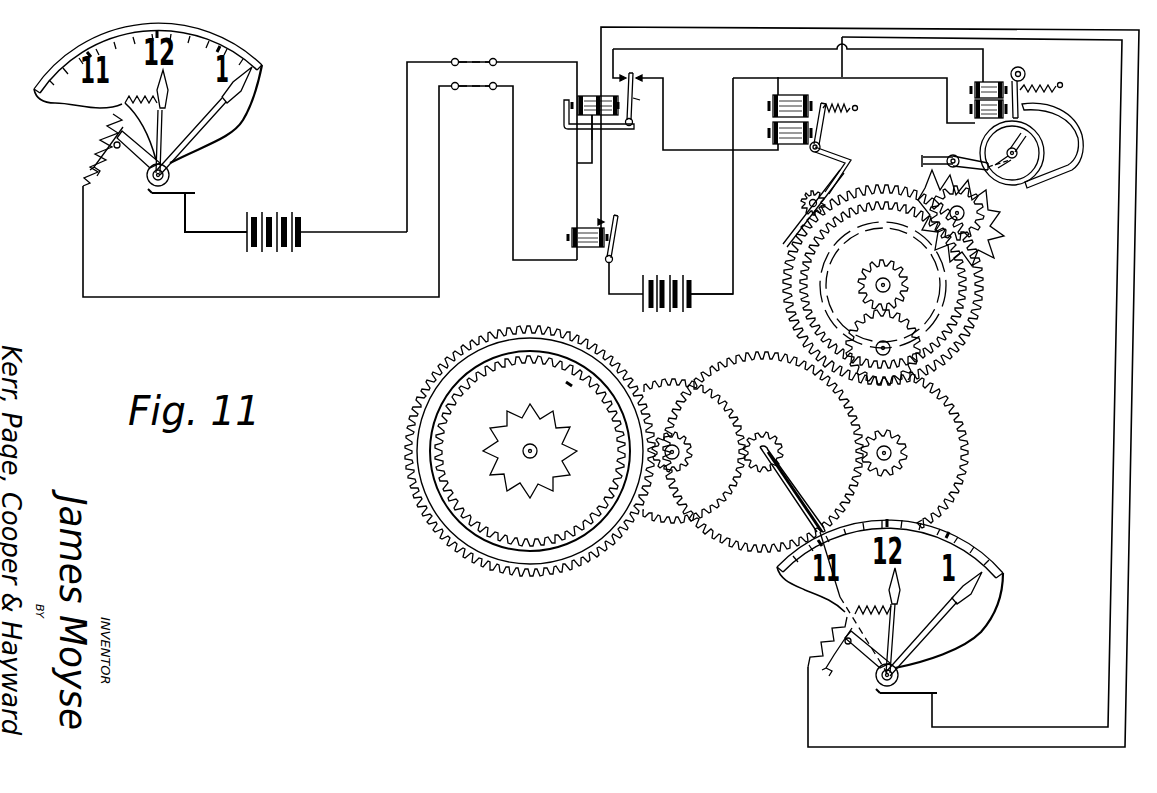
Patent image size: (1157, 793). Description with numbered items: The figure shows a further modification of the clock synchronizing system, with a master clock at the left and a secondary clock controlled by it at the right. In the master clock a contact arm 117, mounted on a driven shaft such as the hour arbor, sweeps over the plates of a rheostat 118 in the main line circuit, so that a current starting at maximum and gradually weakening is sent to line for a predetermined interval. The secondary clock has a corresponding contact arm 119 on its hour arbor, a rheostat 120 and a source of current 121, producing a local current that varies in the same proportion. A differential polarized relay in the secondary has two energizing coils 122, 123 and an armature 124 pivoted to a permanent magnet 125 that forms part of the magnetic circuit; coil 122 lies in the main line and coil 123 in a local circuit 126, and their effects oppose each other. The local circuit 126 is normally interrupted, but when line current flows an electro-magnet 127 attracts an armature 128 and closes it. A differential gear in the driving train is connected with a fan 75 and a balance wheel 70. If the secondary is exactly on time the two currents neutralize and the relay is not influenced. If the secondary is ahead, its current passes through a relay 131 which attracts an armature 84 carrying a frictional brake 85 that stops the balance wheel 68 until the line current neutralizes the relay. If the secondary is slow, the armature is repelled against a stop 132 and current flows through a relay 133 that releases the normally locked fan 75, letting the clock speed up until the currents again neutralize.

The contact arm 117 is at (125, 162).
The rheostat 118 is at (88, 158).
The contact arm 119 is at (856, 665).
The rheostat 120 is at (812, 643).
The source of current 121 is at (671, 302).
The energizing coil 122 is at (600, 96).
The energizing coil 123 is at (606, 117).
The armature 124 is at (634, 99).
The permanent magnet 125 is at (570, 129).
The local circuit 126 is at (733, 208).
The electro-magnet 127 is at (590, 247).
The armature 128 is at (617, 234).
The relay 131 is at (993, 82).
The stop 132 is at (640, 76).
The relay 133 is at (798, 96).
The balance wheel 68 is at (988, 240).
The balance wheel 70 is at (1005, 184).
The fan 75 is at (830, 179).
The armature 84 is at (1023, 100).
The frictional brake 85 is at (1027, 186).